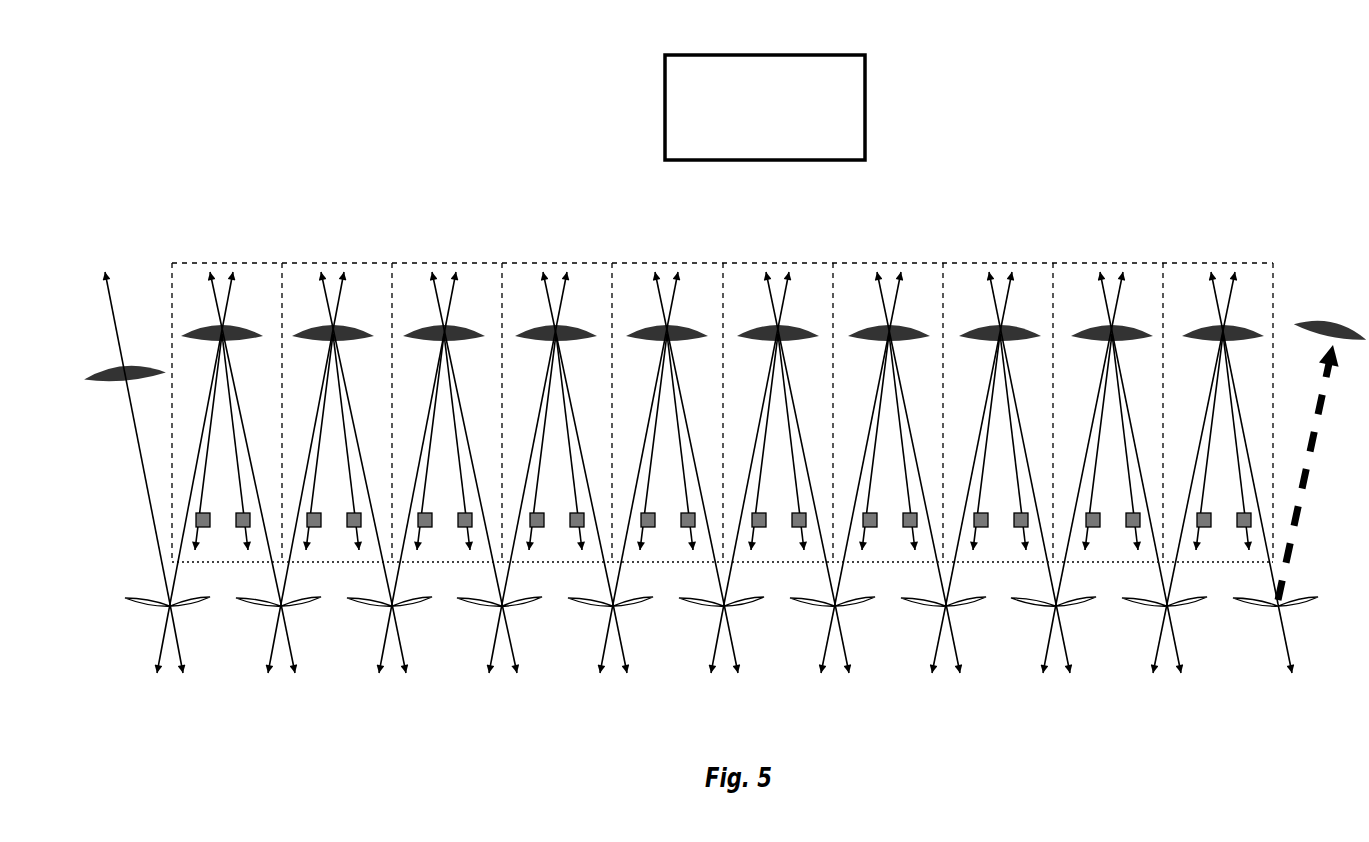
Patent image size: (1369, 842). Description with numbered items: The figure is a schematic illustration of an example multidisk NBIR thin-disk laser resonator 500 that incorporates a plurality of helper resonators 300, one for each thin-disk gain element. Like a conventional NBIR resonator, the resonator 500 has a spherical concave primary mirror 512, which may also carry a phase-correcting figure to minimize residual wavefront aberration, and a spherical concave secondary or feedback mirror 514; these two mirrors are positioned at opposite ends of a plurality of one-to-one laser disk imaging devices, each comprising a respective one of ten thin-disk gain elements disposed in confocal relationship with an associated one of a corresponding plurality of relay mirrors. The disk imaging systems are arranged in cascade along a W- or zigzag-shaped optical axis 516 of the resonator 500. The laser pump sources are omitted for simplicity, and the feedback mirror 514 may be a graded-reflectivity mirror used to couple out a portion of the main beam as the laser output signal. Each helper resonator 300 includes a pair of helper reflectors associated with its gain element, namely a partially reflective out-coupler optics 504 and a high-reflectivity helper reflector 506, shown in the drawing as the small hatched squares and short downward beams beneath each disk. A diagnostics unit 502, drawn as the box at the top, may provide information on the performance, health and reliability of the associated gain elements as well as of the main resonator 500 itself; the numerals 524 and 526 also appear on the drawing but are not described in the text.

The multidisk NBIR TDL resonator 500 is at (1015, 197).
The diagnostics unit 502 is at (663, 110).
The helper resonator 300 is at (683, 253).
The partially reflective out-coupler optics 504 is at (197, 510).
The high-reflectivity helper reflector 506 is at (257, 478).
The primary mirror 512 is at (1328, 320).
The secondary or feedback mirror 514 is at (117, 385).
The optical axis 516 is at (137, 445).
The detector 524 is at (302, 513).
The detector 526 is at (1262, 500).